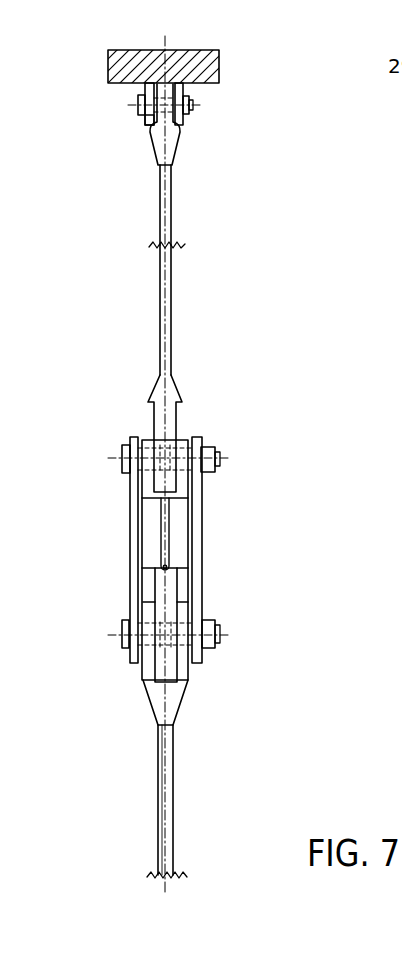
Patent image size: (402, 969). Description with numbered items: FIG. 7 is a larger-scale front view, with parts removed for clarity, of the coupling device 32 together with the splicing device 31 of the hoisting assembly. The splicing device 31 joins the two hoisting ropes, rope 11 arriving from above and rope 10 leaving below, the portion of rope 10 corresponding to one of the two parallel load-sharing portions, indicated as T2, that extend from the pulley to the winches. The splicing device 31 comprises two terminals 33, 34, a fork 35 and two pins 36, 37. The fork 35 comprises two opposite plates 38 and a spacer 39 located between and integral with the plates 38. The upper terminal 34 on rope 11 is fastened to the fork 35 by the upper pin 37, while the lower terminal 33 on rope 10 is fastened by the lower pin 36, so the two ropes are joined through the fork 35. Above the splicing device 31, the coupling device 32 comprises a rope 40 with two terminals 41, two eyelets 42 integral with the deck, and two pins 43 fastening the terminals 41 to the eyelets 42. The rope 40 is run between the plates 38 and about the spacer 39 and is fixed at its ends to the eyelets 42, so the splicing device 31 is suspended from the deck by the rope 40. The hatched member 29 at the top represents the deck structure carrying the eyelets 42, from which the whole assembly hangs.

The support bracket 29 is at (205, 74).
The eyelet 42 is at (183, 90).
The pin 43 is at (150, 120).
The terminal 41 is at (180, 147).
The rope 40 is at (172, 217).
The rope 11 is at (172, 300).
The coupling device 32 is at (167, 229).
The terminal 34 is at (172, 427).
The fork 35 is at (224, 532).
The plate 38 is at (130, 578).
The pin 37 is at (185, 475).
The spacer 39 is at (148, 525).
The pin 36 is at (203, 652).
The terminal 33 is at (178, 710).
The splicing device 31 is at (194, 564).
The parallel portion T2 is at (217, 801).
The rope 10 is at (175, 828).